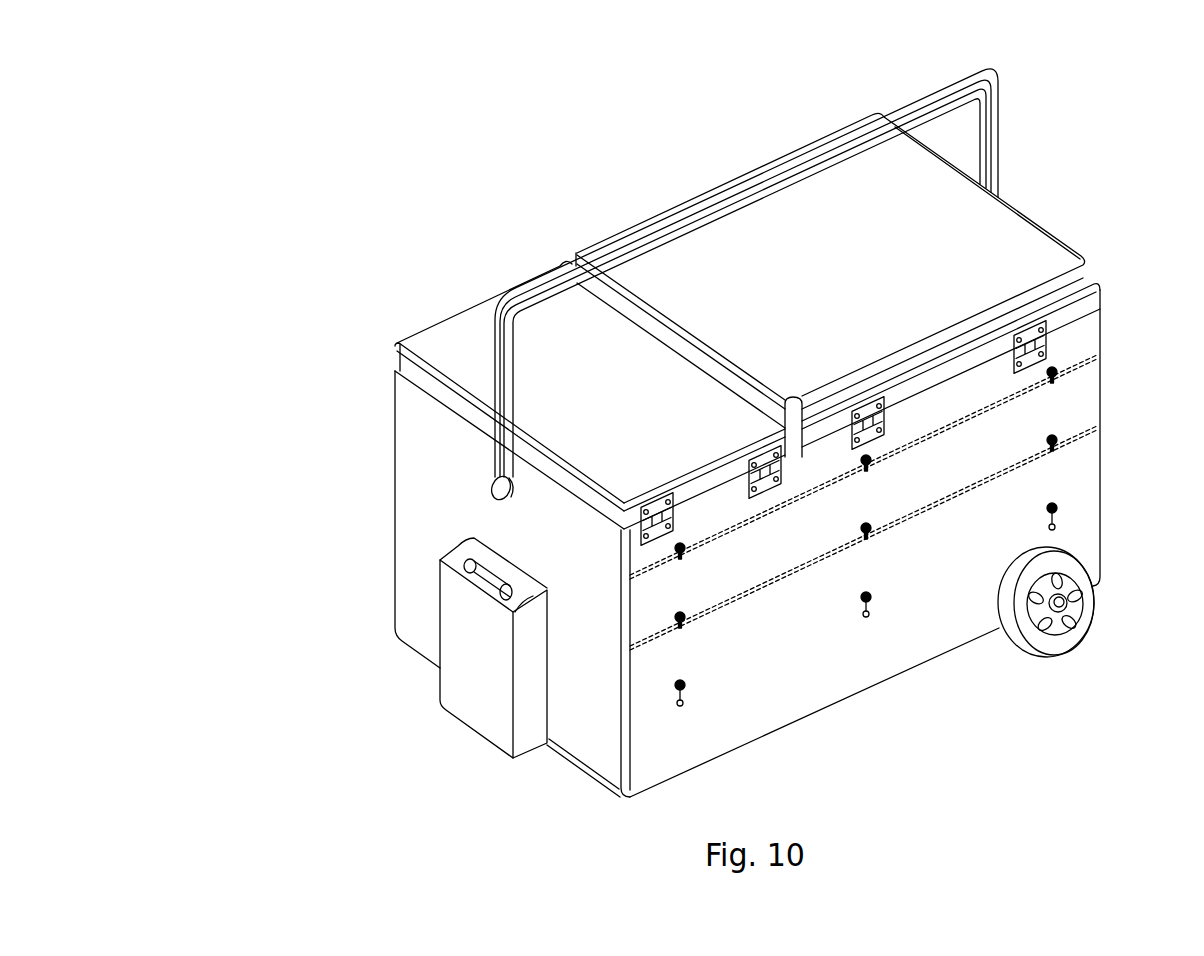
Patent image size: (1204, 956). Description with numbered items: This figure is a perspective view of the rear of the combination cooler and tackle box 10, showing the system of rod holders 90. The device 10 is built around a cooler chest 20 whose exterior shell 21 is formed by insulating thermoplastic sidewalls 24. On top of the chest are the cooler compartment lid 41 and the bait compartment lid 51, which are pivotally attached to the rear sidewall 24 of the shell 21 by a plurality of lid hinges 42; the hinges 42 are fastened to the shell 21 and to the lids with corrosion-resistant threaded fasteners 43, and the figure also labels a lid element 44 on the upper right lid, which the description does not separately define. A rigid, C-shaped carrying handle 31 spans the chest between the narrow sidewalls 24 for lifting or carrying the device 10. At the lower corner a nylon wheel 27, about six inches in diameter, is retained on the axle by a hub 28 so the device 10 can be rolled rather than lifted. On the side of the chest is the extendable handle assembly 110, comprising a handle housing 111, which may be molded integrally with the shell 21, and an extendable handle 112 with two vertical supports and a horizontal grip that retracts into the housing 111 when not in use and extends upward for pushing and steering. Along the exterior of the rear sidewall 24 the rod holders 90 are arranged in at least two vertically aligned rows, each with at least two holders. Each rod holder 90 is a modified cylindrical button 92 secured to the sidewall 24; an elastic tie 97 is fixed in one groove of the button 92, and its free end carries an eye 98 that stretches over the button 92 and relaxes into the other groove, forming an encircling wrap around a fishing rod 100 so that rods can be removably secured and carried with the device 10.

The combination cooler and tackle box 10 is at (253, 155).
The cooler chest 20 is at (405, 422).
The exterior shell 21 is at (402, 570).
The sidewalls 24 is at (808, 698).
The wheel 27 is at (1057, 640).
The hub 28 is at (1064, 613).
The carrying handle 31 is at (990, 84).
The cooler compartment lid 41 is at (1093, 288).
The lid hinges 42 is at (1033, 330).
The threaded fasteners 43 is at (1060, 322).
The lid 44 is at (1007, 217).
The bait compartment lid 51 is at (462, 337).
The rod holders 90 is at (1056, 436).
The button 92 is at (1056, 503).
The elastic tie 97 is at (680, 707).
The eye 98 is at (1057, 528).
The fishing rod 100 is at (1115, 350).
The extendable handle assembly 110 is at (438, 695).
The handle housing 111 is at (470, 716).
The extendable handle 112 is at (467, 562).